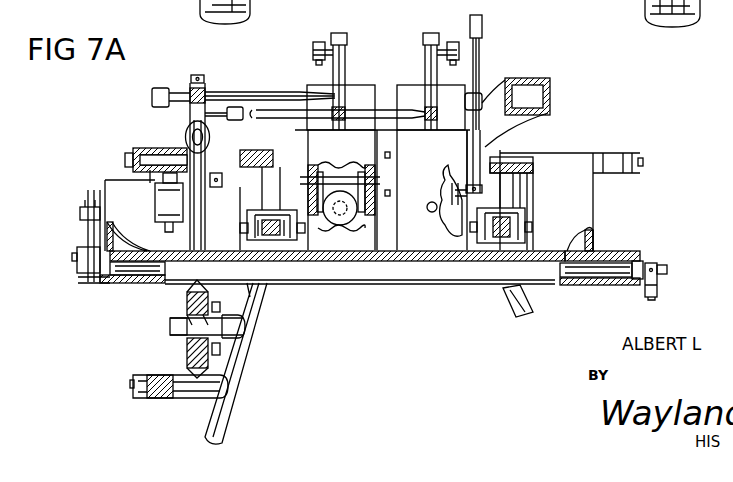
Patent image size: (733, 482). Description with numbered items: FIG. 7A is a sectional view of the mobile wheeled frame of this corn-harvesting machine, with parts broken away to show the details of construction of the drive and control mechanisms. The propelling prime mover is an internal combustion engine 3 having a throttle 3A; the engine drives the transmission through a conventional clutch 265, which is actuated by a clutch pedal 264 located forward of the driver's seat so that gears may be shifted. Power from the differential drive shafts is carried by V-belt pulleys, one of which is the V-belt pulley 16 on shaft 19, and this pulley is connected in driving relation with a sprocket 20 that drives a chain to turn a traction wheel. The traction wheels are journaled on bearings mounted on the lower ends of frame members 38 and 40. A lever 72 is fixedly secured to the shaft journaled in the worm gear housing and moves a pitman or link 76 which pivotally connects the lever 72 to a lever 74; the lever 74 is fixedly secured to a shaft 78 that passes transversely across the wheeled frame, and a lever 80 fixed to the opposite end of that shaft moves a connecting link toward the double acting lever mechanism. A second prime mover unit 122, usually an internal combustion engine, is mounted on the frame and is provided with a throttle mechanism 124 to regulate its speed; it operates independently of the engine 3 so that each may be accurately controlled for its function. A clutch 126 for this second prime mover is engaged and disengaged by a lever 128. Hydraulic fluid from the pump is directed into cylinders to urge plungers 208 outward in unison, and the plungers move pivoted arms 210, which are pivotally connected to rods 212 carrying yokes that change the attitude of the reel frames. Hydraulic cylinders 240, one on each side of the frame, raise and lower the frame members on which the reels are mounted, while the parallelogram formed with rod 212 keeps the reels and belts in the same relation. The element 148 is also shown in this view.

The internal combustion engine 3 is at (360, 85).
The throttle 3A is at (240, 93).
The V-belt pulley 16 is at (188, 348).
The shaft 19 is at (175, 322).
The sprocket 20 is at (222, 307).
The frame member 38 is at (245, 352).
The frame member 40 is at (503, 314).
The lever 72 is at (88, 207).
The lever 74 is at (93, 282).
The pitman or link 76 is at (88, 238).
The shaft 78 is at (145, 275).
The lever 80 is at (665, 288).
The second prime mover unit 122 is at (405, 90).
The throttle mechanism 124 is at (270, 110).
The clutch 126 is at (450, 225).
The lever 128 is at (481, 50).
The frame 148 is at (550, 95).
The plunger 208 is at (255, 236).
The pivoted arm 210 is at (247, 218).
The rod 212 is at (490, 270).
The hydraulic cylinder 240 is at (165, 398).
The clutch pedal 264 is at (165, 200).
The clutch 265 is at (340, 225).